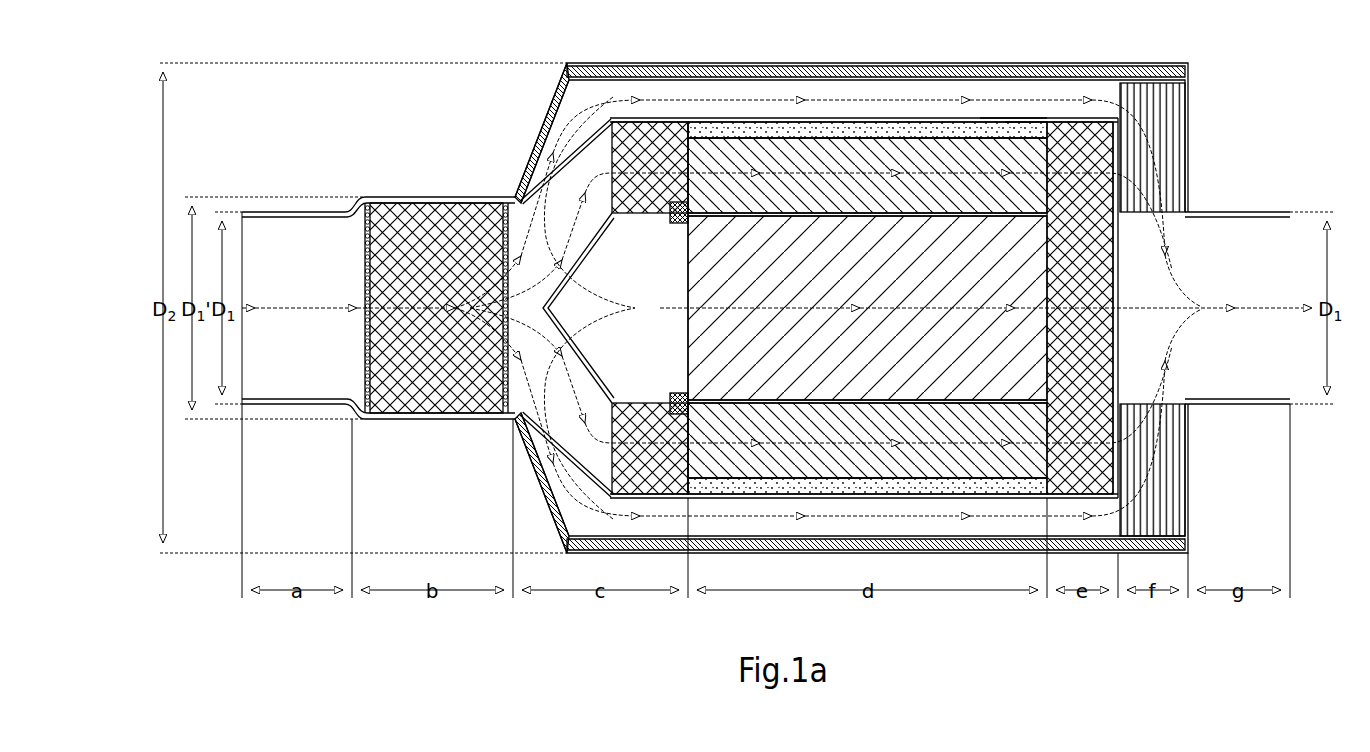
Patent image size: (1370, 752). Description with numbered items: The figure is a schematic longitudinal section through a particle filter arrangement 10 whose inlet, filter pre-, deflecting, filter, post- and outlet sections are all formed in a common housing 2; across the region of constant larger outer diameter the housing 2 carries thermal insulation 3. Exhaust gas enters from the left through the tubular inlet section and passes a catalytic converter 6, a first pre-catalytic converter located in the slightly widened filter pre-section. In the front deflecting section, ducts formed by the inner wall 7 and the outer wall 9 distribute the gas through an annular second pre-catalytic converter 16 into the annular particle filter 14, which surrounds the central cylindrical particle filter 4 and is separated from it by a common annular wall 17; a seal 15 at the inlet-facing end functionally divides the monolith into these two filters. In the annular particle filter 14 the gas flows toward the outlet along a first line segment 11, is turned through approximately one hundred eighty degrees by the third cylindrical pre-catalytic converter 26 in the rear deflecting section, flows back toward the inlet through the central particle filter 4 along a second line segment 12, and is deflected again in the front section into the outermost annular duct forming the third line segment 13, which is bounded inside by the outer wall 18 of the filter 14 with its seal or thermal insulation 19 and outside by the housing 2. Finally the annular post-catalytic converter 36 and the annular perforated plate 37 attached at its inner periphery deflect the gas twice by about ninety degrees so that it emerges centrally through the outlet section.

The housing 2 is at (532, 135).
The thermal insulation 3 is at (613, 66).
The central cylindrical particle filter 4 is at (695, 284).
The catalytic converter 6 is at (397, 210).
The inner wall 7 is at (598, 243).
The outer wall 9 is at (525, 178).
The particle filter arrangement 10 is at (1121, 63).
The first line segment 11 is at (744, 142).
The second line segment 12 is at (830, 150).
The third line segment 13 is at (870, 82).
The annular particle filter 14 is at (895, 138).
The seal 15 is at (676, 224).
The annular second pre-catalytic converter 16 is at (662, 125).
The common annular wall 17 is at (922, 150).
The outer wall 18 is at (985, 118).
The seal and/or thermal insulation 19 is at (1012, 128).
The third cylindrical (pre-)catalytic converter 26 is at (1060, 125).
The annular post-catalytic converter 36 is at (1168, 102).
The annular perforated plate 37 is at (1147, 215).